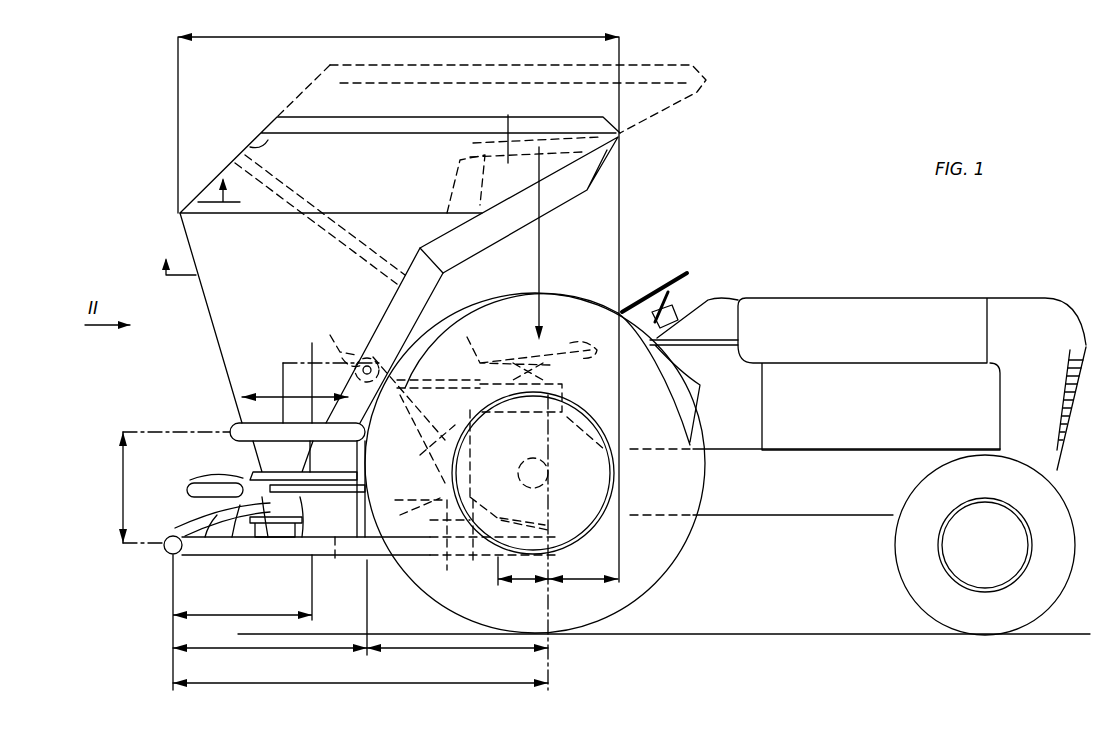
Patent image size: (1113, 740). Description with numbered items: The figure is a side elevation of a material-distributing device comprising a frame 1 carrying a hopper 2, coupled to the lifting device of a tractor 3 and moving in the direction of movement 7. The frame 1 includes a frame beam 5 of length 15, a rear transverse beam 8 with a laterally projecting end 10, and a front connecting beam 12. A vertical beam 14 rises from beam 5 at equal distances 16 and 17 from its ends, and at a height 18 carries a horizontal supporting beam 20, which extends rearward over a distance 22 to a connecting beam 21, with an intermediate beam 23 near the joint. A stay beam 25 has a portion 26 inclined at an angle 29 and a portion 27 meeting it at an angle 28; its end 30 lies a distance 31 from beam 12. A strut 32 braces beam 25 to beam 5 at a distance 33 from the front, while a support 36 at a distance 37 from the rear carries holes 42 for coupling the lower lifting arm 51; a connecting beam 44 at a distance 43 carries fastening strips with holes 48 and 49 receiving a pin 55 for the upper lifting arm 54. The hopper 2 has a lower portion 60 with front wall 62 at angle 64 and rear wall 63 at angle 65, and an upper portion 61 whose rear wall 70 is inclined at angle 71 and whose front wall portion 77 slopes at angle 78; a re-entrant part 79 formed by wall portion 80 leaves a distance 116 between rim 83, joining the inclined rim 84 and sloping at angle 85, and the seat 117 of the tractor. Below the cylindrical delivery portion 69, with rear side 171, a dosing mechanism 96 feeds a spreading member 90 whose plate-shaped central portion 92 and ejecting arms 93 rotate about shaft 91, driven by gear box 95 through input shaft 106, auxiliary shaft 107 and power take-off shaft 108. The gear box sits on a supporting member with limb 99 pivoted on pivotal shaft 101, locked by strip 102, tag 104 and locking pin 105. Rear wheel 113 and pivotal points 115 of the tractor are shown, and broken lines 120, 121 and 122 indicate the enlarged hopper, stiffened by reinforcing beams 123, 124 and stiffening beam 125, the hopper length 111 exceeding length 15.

The frame 1 is at (387, 562).
The hopper 2 is at (434, 114).
The tractor 3 is at (908, 307).
The frame beam 5 is at (470, 565).
The direction of movement 7 is at (835, 265).
The transverse beam 8 is at (165, 552).
The end of transverse beam 10 is at (163, 547).
The connecting beam 12 is at (545, 522).
The vertical beam 14 is at (370, 445).
The length of frame beams 15 is at (370, 680).
The distance 16 is at (258, 645).
The distance 17 is at (452, 648).
The height 18 is at (120, 488).
The horizontal supporting beam 20 is at (295, 404).
The connecting beam 21 is at (232, 422).
The distance 22 is at (354, 372).
The intermediate beam 23 is at (330, 402).
The stay beam 25 is at (374, 122).
The portion of stay beam 26 is at (395, 316).
The portion of stay beam 27 is at (568, 188).
The angle 28 is at (463, 263).
The angle 29 is at (437, 306).
The end of stay beam 30 is at (625, 135).
The distance 31 is at (590, 585).
The strut 32 is at (420, 412).
The distance 33 is at (535, 582).
The support 36 is at (305, 557).
The distance 37 is at (235, 616).
The holes 42 is at (408, 487).
The distance 43 is at (283, 373).
The connecting beam 44 is at (344, 348).
The holes 48 is at (331, 331).
The holes 49 is at (312, 348).
The lower lifting arm 51 is at (447, 563).
The upper lifting arm 54 is at (468, 345).
The pin 55 is at (405, 345).
The lower hopper portion 60 is at (225, 291).
The upper hopper portion 61 is at (268, 140).
The front wall 62 is at (398, 308).
The rear wall 63 is at (208, 278).
The angle 64 is at (430, 272).
The angle 65 is at (170, 258).
The cylindrical delivery portion 69 is at (255, 458).
The rear wall 70 is at (250, 147).
The angle 71 is at (233, 186).
The front wall portion 77 is at (521, 192).
The angle 78 is at (605, 156).
The re-entrant part 79 is at (447, 203).
The wall portion 80 is at (455, 172).
The rim 83 is at (462, 190).
The inwardly inclined rim 84 is at (630, 122).
The angle 85 is at (478, 143).
The spreading member 90 is at (200, 498).
The shaft 91 is at (345, 470).
The plate-shaped central portion 92 is at (185, 518).
The ejecting arms 93 is at (187, 488).
The gear box 95 is at (276, 562).
The dosing mechanism 96 is at (200, 476).
The limb 99 is at (275, 557).
The pivotal shaft 101 is at (358, 557).
The strip 102 is at (242, 622).
The tag 104 is at (205, 557).
The locking pin 105 is at (235, 557).
The input shaft 106 is at (340, 560).
The auxiliary shaft 107 is at (413, 478).
The power take-off shaft 108 is at (518, 468).
The length of hopper 111 is at (388, 36).
The rear wheel 113 is at (658, 566).
The pivotal points 115 is at (520, 490).
The distance 116 is at (540, 241).
The seat 117 is at (578, 352).
The broken line 120 is at (508, 66).
The portion 121 is at (312, 82).
The broken lines 122 is at (703, 95).
The reinforcing beam 123 is at (311, 184).
The reinforcing beam 124 is at (380, 252).
The stiffening beam 125 is at (234, 161).
The rear side of delivery part 171 is at (253, 442).